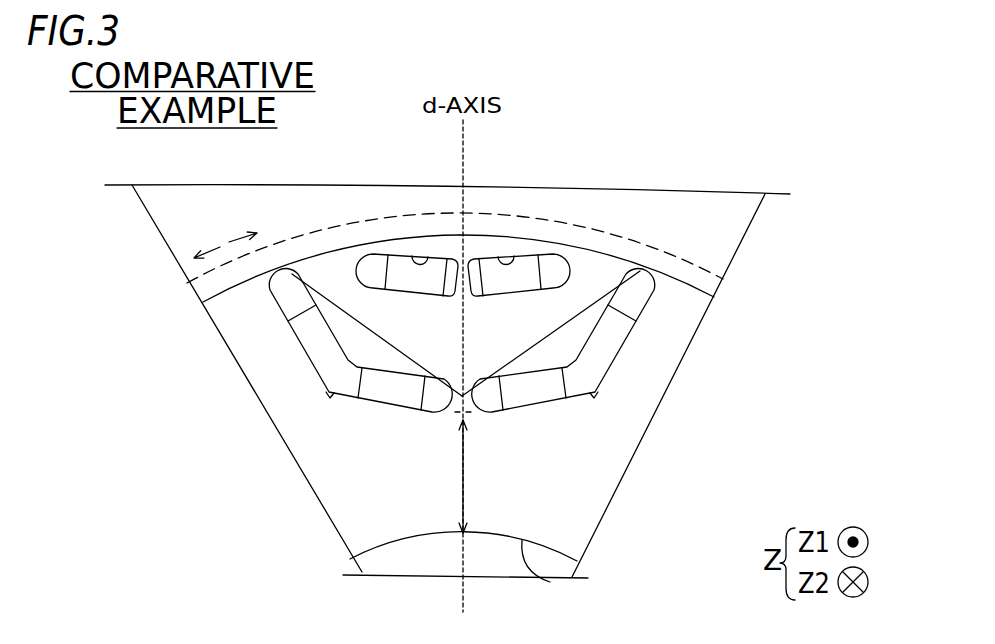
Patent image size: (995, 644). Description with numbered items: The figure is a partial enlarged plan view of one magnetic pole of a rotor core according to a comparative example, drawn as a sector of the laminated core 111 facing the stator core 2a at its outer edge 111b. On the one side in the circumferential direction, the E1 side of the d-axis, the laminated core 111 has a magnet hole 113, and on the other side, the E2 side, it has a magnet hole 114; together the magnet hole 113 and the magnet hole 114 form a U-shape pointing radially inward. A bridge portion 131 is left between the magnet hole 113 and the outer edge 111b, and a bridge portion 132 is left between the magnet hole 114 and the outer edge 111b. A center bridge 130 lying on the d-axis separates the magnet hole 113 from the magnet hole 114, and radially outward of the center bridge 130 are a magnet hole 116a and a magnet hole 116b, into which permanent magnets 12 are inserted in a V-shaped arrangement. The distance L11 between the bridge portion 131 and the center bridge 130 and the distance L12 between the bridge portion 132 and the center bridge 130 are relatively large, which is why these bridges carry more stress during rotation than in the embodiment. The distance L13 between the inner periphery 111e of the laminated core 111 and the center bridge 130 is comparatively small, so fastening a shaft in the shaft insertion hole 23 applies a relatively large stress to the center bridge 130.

The stator core 2a is at (717, 213).
The permanent magnets 12 is at (322, 335).
The shaft insertion hole 23 is at (550, 582).
The laminated core 111 is at (357, 533).
The outer edge 111b is at (228, 268).
The inner periphery 111e is at (553, 543).
The magnet hole 113 is at (328, 400).
The magnet hole 114 is at (594, 392).
The magnet hole 116a is at (413, 256).
The magnet hole 116b is at (517, 256).
The center bridge 130 is at (452, 415).
The bridge portion 131 is at (318, 238).
The bridge portion 132 is at (668, 262).
The distance L11 is at (365, 327).
The distance L12 is at (558, 327).
The distance L13 is at (465, 482).
The one side in the circumferential direction E1 is at (204, 235).
The other side in the circumferential direction E2 is at (243, 220).